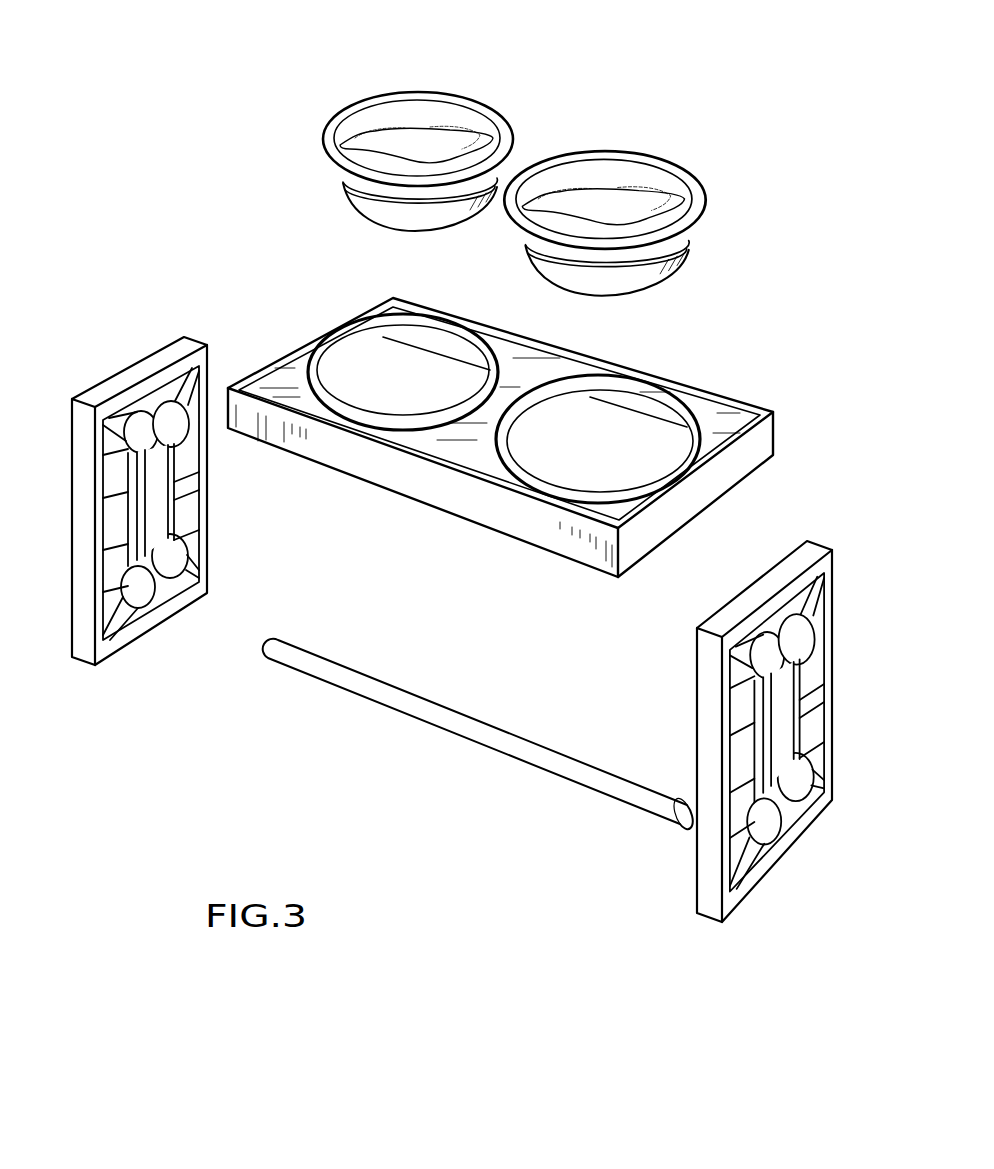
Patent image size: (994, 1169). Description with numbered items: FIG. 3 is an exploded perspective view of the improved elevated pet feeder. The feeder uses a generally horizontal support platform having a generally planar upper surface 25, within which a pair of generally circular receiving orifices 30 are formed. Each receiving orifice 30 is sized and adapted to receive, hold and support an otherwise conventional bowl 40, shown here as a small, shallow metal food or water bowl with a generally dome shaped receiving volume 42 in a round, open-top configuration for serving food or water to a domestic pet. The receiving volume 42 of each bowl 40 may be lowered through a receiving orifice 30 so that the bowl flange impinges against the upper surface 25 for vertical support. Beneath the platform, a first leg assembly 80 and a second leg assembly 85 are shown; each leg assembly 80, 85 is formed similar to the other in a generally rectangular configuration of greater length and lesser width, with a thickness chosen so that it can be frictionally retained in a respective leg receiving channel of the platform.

The planar upper surface 25 is at (295, 342).
The receiving orifice 30 is at (402, 387).
The bowl 40 is at (548, 154).
The receiving volume 42 is at (462, 123).
The first leg assembly 80 is at (92, 693).
The second leg assembly 85 is at (723, 928).